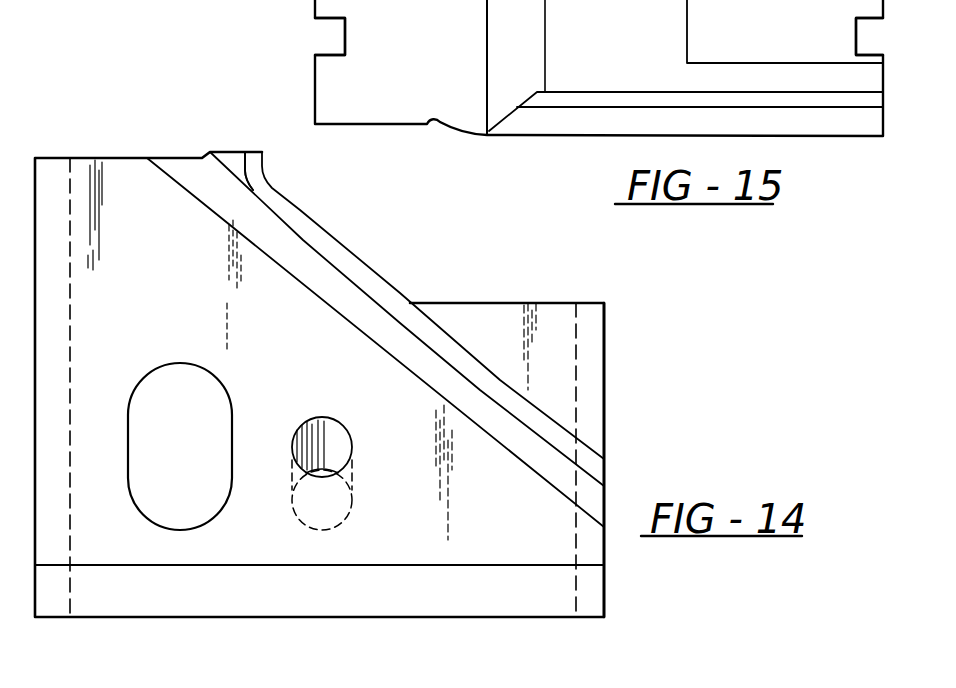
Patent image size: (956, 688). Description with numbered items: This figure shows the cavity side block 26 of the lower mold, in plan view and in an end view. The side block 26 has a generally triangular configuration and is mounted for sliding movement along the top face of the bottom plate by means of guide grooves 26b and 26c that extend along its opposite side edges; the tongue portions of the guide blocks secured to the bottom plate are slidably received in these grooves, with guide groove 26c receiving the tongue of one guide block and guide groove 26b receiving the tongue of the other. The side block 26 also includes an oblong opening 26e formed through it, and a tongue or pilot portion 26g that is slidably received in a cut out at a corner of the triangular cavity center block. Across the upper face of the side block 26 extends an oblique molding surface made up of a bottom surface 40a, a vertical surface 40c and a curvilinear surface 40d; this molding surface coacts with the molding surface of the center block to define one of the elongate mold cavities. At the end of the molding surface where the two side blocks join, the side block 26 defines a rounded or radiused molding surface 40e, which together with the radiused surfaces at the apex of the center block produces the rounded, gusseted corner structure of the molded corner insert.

In FIG. 15, the cavity side block 26 is at (592, 151).
In FIG. 14, the cavity side block 26 is at (190, 627).
In FIG. 15, the guide groove 26b is at (331, 19).
In FIG. 15, the guide groove 26c is at (866, 19).
In FIG. 14, the oblong opening 26e is at (230, 408).
In FIG. 14, the tongue or pilot portion 26g is at (607, 406).
In FIG. 14, the bottom surface 40a is at (490, 375).
In FIG. 14, the vertical surface 40c is at (443, 353).
In FIG. 14, the curvilinear surface 40d is at (508, 437).
In FIG. 14, the rounded or radiused molding surface 40e is at (245, 171).